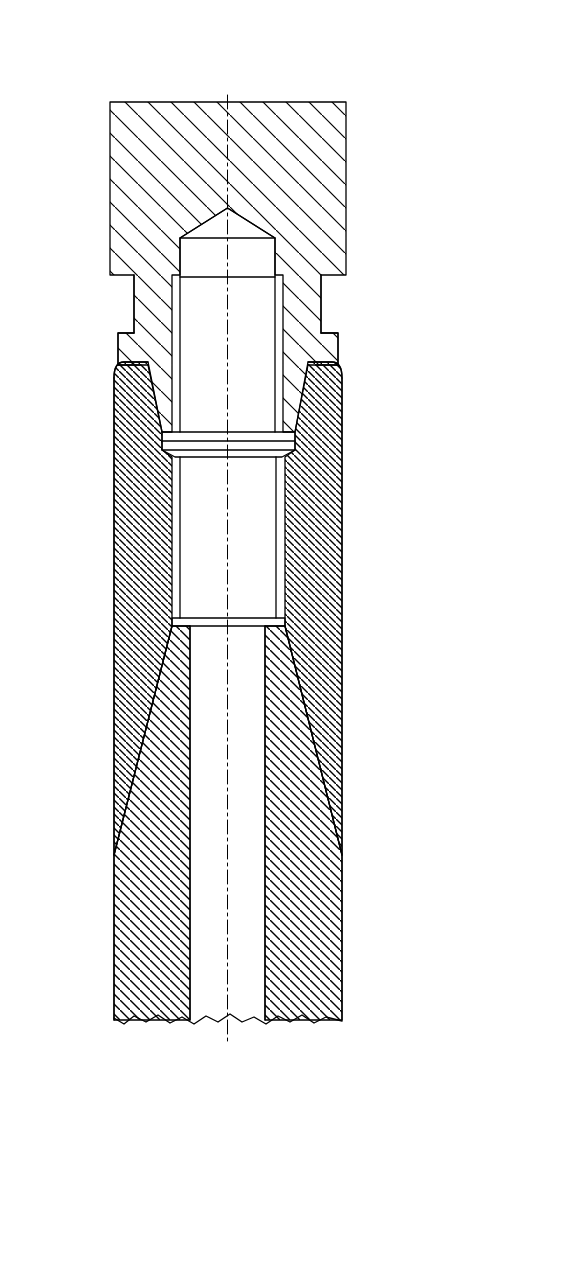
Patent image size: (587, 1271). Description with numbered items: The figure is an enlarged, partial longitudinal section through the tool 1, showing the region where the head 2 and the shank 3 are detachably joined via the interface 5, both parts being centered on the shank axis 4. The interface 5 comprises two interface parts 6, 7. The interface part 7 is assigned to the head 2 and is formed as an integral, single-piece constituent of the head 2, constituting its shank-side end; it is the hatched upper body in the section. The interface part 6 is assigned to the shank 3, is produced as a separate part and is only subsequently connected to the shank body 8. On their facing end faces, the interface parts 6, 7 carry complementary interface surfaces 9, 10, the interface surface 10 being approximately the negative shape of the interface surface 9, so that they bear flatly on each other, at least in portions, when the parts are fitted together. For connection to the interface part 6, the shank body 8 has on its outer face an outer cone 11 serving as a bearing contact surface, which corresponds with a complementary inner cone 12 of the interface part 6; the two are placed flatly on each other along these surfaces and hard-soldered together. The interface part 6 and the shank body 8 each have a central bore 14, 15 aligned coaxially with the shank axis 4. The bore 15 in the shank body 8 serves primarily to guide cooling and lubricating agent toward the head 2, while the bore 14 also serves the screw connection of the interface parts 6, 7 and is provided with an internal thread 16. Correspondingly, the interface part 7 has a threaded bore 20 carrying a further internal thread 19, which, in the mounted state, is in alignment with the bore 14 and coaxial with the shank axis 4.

The tool 1 is at (437, 344).
The head 2 is at (316, 102).
The shank 3 is at (429, 616).
The shank axis 4 is at (227, 133).
The interface 5 is at (379, 315).
The interface part 6 is at (115, 493).
The interface part 7 is at (140, 311).
The shank body 8 is at (345, 918).
The interface surface 9 is at (285, 403).
The interface surface 10 is at (328, 363).
The outer cone 11 is at (295, 823).
The inner cone 12 is at (313, 740).
The bore 14 is at (252, 540).
The bore 15 is at (243, 988).
The internal thread 16 is at (170, 562).
The internal thread 19 is at (150, 348).
The threaded bore 20 is at (248, 315).